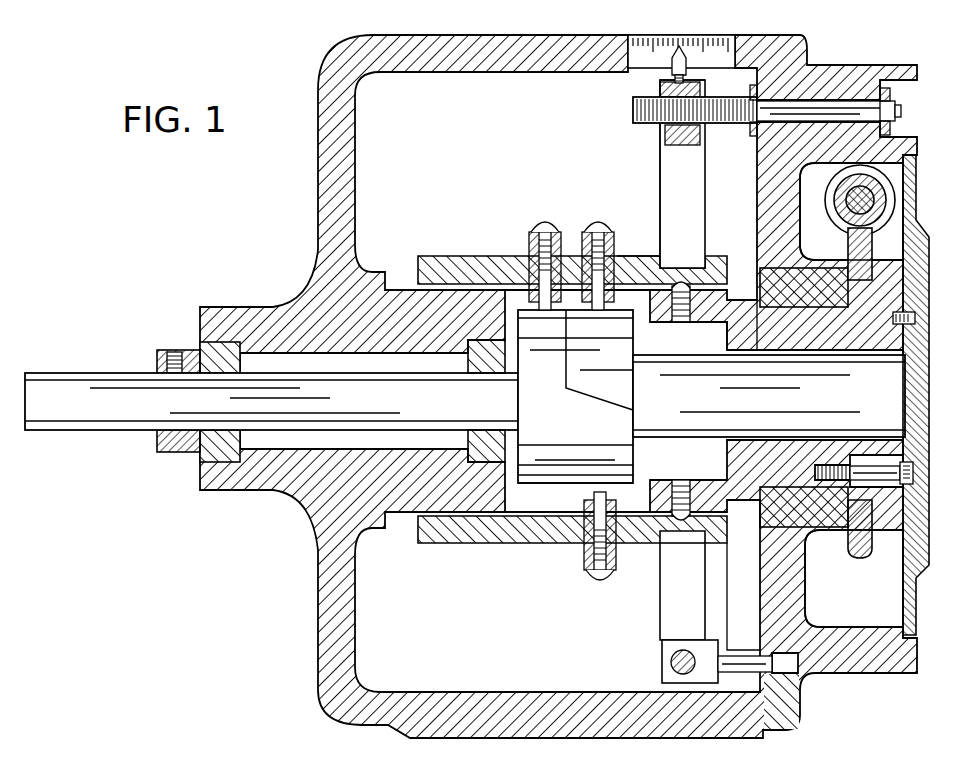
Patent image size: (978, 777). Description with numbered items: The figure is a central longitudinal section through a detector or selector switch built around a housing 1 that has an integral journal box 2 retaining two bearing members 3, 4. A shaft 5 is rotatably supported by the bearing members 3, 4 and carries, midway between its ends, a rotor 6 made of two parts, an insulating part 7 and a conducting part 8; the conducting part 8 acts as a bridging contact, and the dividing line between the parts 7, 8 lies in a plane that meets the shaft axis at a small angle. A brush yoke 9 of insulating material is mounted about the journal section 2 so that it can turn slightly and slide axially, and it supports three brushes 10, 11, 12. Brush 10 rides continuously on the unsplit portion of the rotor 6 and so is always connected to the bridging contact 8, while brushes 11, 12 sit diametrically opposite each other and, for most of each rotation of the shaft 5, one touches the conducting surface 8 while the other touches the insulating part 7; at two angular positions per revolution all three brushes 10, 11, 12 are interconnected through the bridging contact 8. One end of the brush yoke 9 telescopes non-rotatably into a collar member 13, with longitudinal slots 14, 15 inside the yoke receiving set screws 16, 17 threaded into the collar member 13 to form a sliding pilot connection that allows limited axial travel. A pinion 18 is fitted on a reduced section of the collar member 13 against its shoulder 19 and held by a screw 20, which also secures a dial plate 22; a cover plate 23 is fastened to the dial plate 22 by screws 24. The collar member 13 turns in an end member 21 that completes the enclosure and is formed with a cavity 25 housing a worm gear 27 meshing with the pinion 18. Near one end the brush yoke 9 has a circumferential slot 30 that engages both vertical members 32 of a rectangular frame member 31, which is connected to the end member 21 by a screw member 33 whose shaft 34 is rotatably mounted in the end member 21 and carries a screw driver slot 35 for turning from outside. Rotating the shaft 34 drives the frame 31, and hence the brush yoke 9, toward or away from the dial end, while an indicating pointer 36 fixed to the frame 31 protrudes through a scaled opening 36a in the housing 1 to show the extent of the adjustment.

The housing 1 is at (318, 178).
The journal box 2 is at (402, 280).
The bearing member 3 is at (240, 358).
The bearing member 4 is at (468, 355).
The shaft 5 is at (101, 373).
The rotor 6 is at (548, 483).
The insulating part 7 is at (634, 336).
The conducting part 8 is at (634, 450).
The brush yoke 9 is at (466, 256).
The brush 10 is at (560, 222).
The brush 11 is at (609, 222).
The brush 12 is at (606, 574).
The collar member 13 is at (757, 292).
The longitudinal slot 14 is at (652, 260).
The longitudinal slot 15 is at (656, 543).
The set screw 16 is at (690, 328).
The set screw 17 is at (681, 478).
The pinion 18 is at (852, 244).
The shoulder 19 is at (745, 331).
The screw 20 is at (918, 471).
The end member 21 is at (868, 673).
The dial plate 22 is at (918, 623).
The cover plate 23 is at (918, 400).
The screw 24 is at (918, 322).
The cavity 25 is at (895, 174).
The worm gear 27 is at (895, 205).
The circumferential slot 30 is at (680, 264).
The frame member 31 is at (660, 160).
The vertical member 32 is at (662, 181).
The screw member 33 is at (752, 122).
The shaft 34 is at (838, 112).
The screw driver slot 35 is at (901, 110).
The indicating pointer 36 is at (671, 58).
The opening 36a is at (692, 38).